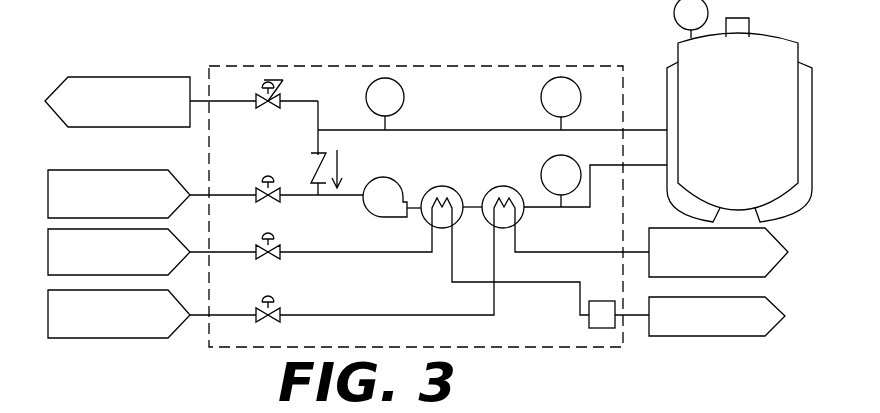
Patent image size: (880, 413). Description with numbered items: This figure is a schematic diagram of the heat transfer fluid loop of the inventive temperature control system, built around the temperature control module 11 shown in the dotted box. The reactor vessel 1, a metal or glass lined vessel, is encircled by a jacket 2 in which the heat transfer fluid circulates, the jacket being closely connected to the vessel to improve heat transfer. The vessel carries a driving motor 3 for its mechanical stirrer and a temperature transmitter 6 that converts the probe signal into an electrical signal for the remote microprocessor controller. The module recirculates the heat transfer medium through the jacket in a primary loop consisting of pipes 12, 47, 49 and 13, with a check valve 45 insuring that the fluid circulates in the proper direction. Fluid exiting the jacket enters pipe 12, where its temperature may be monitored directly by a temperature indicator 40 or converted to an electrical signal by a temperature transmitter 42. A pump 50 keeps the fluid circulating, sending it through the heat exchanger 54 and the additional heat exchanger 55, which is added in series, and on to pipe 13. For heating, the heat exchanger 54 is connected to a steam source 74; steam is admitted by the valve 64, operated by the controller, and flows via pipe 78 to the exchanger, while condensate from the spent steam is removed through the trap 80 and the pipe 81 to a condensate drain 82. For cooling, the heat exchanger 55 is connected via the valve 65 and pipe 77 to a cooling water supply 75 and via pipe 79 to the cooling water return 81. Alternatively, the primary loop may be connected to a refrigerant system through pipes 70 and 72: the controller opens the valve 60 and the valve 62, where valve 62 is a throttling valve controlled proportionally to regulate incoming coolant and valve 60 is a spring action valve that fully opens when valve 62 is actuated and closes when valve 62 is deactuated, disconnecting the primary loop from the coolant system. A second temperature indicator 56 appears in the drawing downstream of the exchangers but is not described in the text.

The reactor vessel 1 is at (769, 45).
The jacket 2 is at (672, 78).
The driving motor 3 is at (749, 22).
The temperature transmitter 6 is at (674, 13).
The temperature control module 11 is at (286, 66).
The pipe 12 is at (660, 130).
The pipe 13 is at (660, 166).
The temperature indicator 40 is at (541, 97).
The temperature transmitter 42 is at (404, 92).
The check valve 45 is at (312, 166).
The pipe 47 is at (318, 144).
The pipe 49 is at (318, 196).
The pump 50 is at (392, 205).
The heat exchanger 54 is at (446, 192).
The heat exchanger 55 is at (506, 192).
The temperature indicator 56 is at (543, 170).
The valve 60 is at (284, 94).
The valve 62 is at (262, 184).
The valve 64 is at (262, 243).
The valve 65 is at (277, 306).
The pipe 70 is at (147, 77).
The pipe 72 is at (132, 170).
The steam source 74 is at (171, 229).
The cooling water supply 75 is at (171, 290).
The pipe 77 is at (360, 315).
The pipe 78 is at (360, 252).
The pipe 79 is at (567, 252).
The trap 80 is at (604, 301).
The cooling water return 81 is at (667, 228).
The condensate drain 82 is at (668, 336).